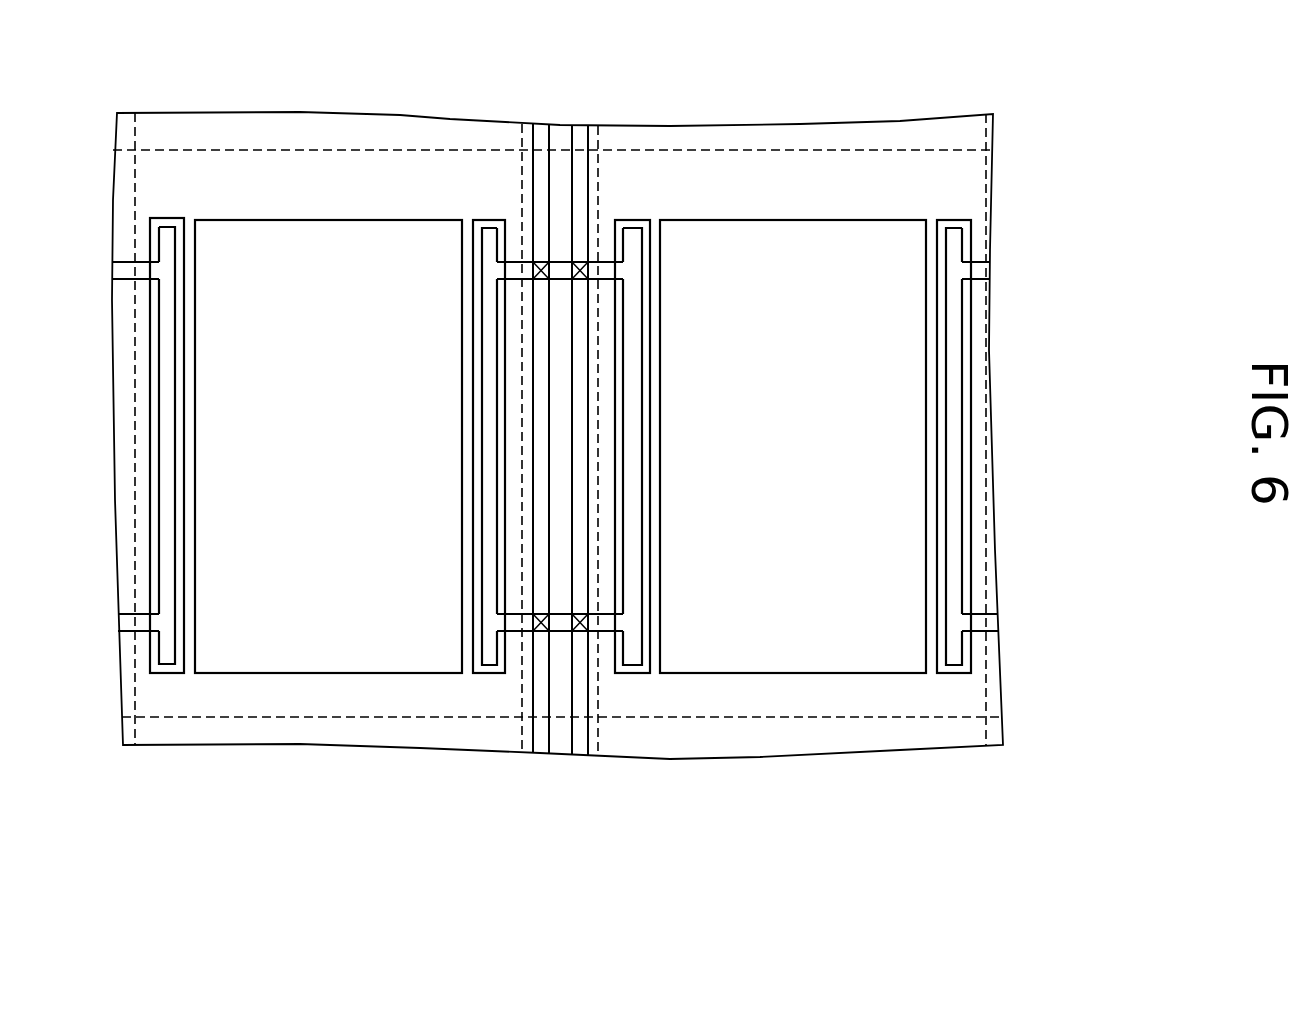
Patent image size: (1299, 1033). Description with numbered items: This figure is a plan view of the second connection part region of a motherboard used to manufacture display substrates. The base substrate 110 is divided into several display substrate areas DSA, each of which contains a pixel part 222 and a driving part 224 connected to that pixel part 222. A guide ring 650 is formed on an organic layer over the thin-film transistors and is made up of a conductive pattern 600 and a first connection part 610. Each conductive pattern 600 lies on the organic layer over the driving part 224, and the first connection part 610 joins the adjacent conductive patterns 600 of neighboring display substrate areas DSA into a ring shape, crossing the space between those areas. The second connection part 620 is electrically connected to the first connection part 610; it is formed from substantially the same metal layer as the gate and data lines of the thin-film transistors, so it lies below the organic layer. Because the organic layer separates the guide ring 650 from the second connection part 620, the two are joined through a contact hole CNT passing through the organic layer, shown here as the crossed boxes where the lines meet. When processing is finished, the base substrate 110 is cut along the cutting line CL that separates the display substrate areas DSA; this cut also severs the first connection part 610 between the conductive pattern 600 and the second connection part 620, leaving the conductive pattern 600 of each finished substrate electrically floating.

The base substrate 110 is at (697, 135).
The display substrate area DSA is at (828, 220).
The cutting line CL is at (599, 142).
The contact hole CNT is at (542, 262).
The pixel part 222 is at (792, 673).
The driving part 224 is at (490, 675).
The conductive pattern 600 is at (630, 668).
The first connection part 610 is at (560, 635).
The second connection part 620 is at (530, 686).
The guide ring 650 is at (747, 541).